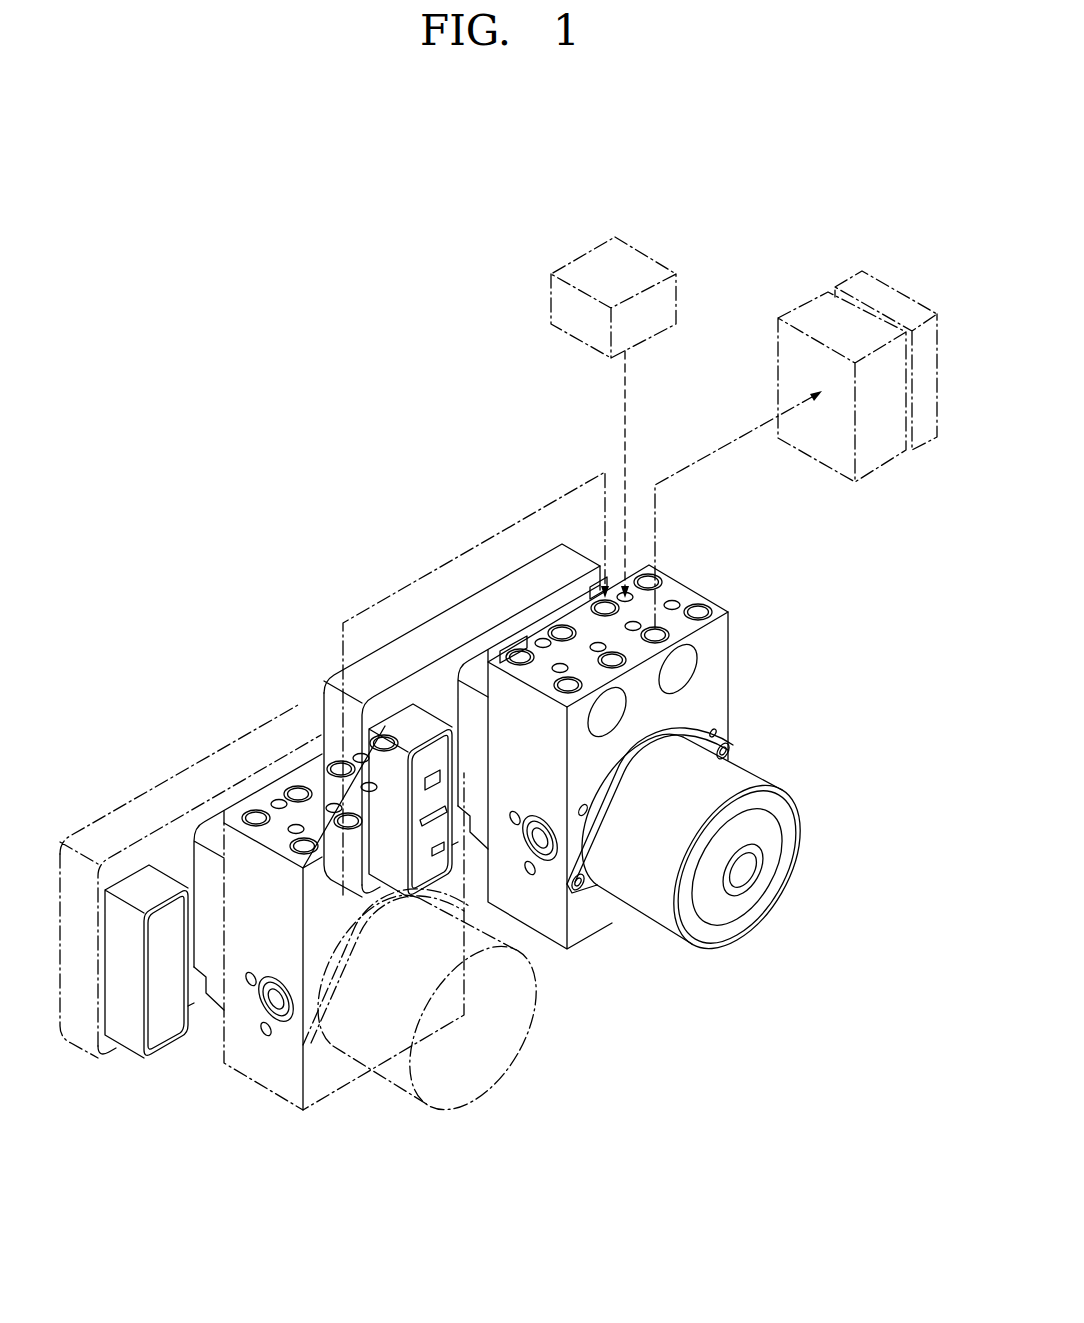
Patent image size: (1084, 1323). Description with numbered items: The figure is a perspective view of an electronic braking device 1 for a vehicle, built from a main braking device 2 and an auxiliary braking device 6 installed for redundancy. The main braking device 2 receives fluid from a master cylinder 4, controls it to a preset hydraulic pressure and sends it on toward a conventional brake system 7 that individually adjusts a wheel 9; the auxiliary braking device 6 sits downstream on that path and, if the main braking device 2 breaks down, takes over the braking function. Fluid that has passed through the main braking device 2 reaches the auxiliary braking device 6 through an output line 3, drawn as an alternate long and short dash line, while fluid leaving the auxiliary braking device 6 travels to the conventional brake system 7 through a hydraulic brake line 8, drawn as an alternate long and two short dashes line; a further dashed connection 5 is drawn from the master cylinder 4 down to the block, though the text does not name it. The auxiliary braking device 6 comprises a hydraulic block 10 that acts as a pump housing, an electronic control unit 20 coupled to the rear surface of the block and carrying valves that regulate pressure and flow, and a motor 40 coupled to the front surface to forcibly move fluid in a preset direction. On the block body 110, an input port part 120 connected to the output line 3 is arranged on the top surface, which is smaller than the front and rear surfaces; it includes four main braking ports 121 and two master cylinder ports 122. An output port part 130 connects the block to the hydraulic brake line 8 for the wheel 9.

The electronic braking device 1 is at (111, 380).
The main braking device 2 is at (375, 1107).
The output line 3 is at (460, 552).
The master cylinder 4 is at (612, 262).
The reservoir connection line 5 is at (625, 437).
The auxiliary braking device 6 is at (598, 970).
The conventional brake system (CBS) 7 is at (818, 310).
The hydraulic brake line 8 is at (742, 432).
The wheel 9 is at (868, 295).
The hydraulic block 10 is at (742, 655).
The electronic control unit (ECU) 20 is at (398, 700).
The motor 40 is at (745, 778).
The block body 110 is at (717, 697).
The input port part 120 is at (767, 482).
The main braking port 121 is at (640, 606).
The master cylinder port 122 is at (628, 595).
The output port part 130 is at (683, 627).